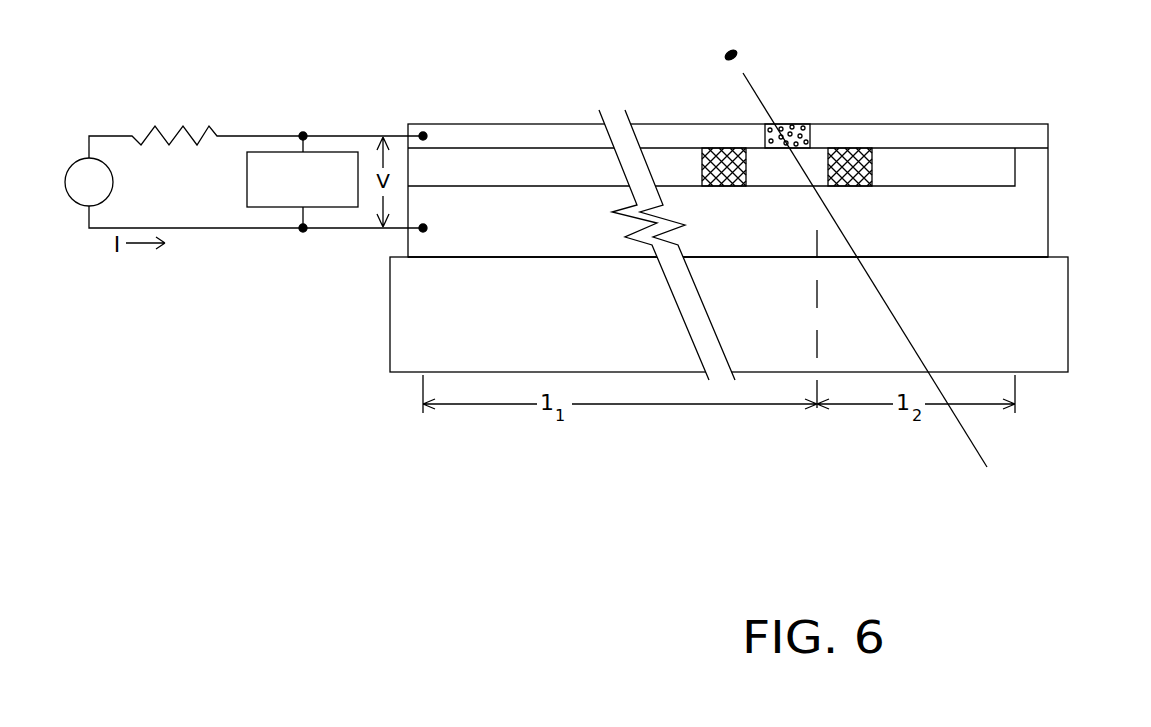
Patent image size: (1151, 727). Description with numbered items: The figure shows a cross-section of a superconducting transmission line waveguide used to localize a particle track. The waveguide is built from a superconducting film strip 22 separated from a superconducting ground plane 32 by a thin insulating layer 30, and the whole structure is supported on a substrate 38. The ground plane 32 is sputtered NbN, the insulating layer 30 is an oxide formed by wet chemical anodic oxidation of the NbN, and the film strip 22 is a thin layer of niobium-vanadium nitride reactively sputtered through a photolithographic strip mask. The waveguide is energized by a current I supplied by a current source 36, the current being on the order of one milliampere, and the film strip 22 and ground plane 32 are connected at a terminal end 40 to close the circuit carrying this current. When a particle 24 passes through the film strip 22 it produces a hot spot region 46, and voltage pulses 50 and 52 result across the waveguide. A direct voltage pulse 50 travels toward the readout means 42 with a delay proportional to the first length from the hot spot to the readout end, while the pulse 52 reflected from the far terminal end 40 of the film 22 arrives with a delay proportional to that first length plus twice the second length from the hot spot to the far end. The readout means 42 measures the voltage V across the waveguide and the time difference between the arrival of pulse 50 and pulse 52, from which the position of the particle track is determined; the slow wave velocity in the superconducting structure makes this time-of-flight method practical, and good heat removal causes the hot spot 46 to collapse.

The superconducting film strip 22 is at (978, 137).
The particle 24 is at (739, 47).
The insulating layer 30 is at (467, 168).
The superconducting ground plane 32 is at (513, 227).
The current source 36 is at (78, 194).
The substrate 38 is at (615, 343).
The terminal end 40 is at (1050, 166).
The readout means 42 is at (270, 207).
The hot spot region 46 is at (795, 123).
The direct voltage pulse 50 is at (715, 148).
The reflected voltage pulse 52 is at (853, 148).